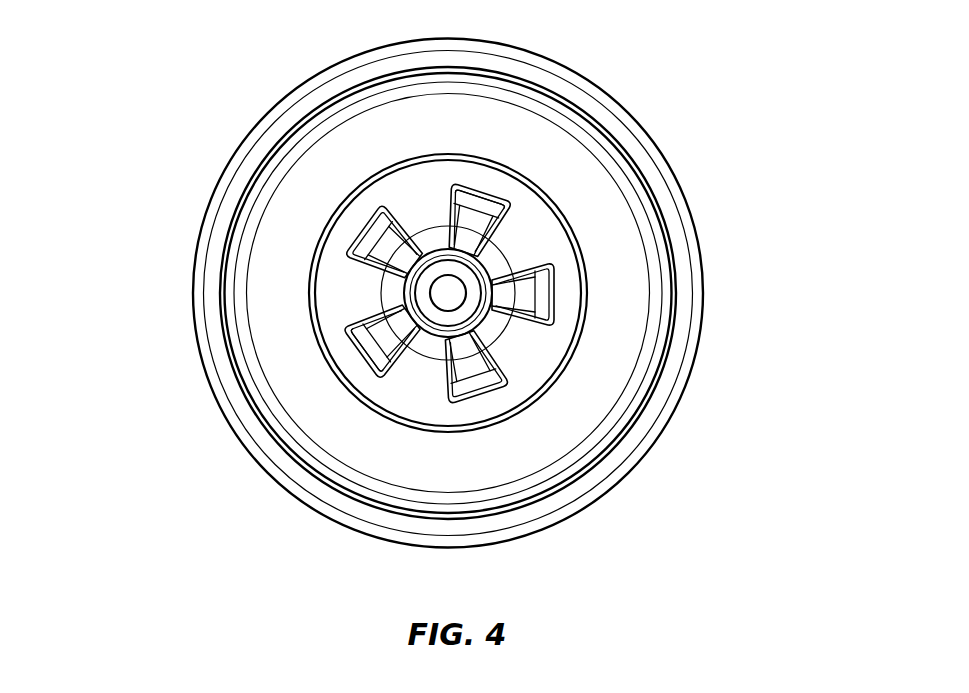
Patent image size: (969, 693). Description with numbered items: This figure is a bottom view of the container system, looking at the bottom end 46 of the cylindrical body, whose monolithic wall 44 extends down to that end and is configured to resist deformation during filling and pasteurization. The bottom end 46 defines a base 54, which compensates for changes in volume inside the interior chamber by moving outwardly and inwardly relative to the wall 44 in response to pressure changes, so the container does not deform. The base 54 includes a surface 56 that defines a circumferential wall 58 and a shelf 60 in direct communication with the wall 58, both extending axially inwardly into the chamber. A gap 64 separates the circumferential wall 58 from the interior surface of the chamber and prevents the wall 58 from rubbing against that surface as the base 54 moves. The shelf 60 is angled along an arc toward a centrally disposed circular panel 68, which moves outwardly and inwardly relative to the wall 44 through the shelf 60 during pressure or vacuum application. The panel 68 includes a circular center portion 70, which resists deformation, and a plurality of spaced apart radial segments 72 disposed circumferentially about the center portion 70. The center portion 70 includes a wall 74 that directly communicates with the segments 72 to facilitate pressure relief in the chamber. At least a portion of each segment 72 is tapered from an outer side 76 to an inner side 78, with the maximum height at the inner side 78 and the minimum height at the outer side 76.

The bottom end 46 is at (158, 72).
The wall 44 is at (655, 145).
The gap 64 is at (663, 193).
The circumferential wall 58 is at (222, 275).
The shelf 60 is at (280, 213).
The base 54 is at (513, 443).
The surface 56 is at (613, 330).
The circular panel 68 is at (407, 200).
The wall 74 is at (430, 273).
The circular center portion 70 is at (455, 297).
The inner side 78 is at (413, 293).
The radial segments 72 is at (480, 210).
The outer side 76 is at (500, 210).